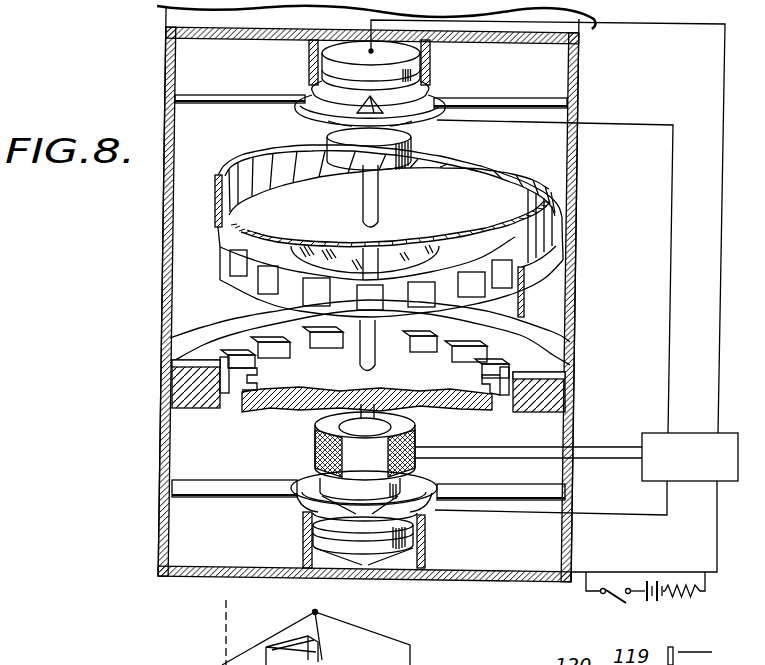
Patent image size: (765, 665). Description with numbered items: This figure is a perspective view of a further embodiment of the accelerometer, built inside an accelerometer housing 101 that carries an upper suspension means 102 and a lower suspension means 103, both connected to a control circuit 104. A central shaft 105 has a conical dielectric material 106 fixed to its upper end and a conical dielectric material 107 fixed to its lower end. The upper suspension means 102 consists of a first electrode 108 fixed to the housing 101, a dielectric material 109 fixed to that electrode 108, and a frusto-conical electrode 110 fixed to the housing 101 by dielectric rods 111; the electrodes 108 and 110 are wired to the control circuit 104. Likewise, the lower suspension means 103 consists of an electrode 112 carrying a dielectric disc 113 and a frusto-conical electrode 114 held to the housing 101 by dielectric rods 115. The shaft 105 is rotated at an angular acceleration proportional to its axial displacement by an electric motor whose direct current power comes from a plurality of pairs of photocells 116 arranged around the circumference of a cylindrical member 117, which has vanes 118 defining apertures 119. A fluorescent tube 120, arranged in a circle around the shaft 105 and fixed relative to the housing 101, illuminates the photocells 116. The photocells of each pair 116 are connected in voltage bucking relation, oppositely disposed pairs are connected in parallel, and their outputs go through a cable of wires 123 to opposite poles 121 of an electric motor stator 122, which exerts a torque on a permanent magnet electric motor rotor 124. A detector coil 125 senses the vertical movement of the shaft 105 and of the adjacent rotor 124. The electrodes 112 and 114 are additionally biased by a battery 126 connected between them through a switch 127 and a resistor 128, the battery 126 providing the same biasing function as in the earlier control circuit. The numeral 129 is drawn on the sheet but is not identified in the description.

The accelerometer housing 101 is at (580, 70).
The upper suspension means 102 is at (300, 62).
The lower suspension means 103 is at (294, 520).
The control circuit 104 is at (554, 296).
The shaft 105 is at (386, 205).
The conical dielectric material 106 is at (413, 143).
The conical dielectric material 107 is at (385, 478).
The first electrode 108 is at (412, 56).
The dielectric material 109 is at (415, 80).
The frusto-conical electrode 110 is at (318, 120).
The dielectric rods 111 is at (262, 104).
The electrode 112 is at (413, 540).
The dielectric disc 113 is at (318, 545).
The frusto-conical electrode 114 is at (312, 480).
The dielectric rods 115 is at (192, 488).
The pairs of photocells 116 is at (262, 162).
The cylindrical member 117 is at (213, 247).
The vanes 118 is at (445, 288).
The apertures 119 is at (240, 278).
The fluorescent tube 120 is at (332, 260).
The poles 121 is at (583, 349).
The electric motor stator 122 is at (190, 331).
The cable of wires 123 is at (566, 313).
The permanent magnet electric motor rotor 124 is at (290, 413).
The detector coil 125 is at (315, 440).
The battery 126 is at (660, 598).
The switch 127 is at (598, 601).
The resistor 128 is at (698, 591).
The battery terminal 129 is at (668, 653).